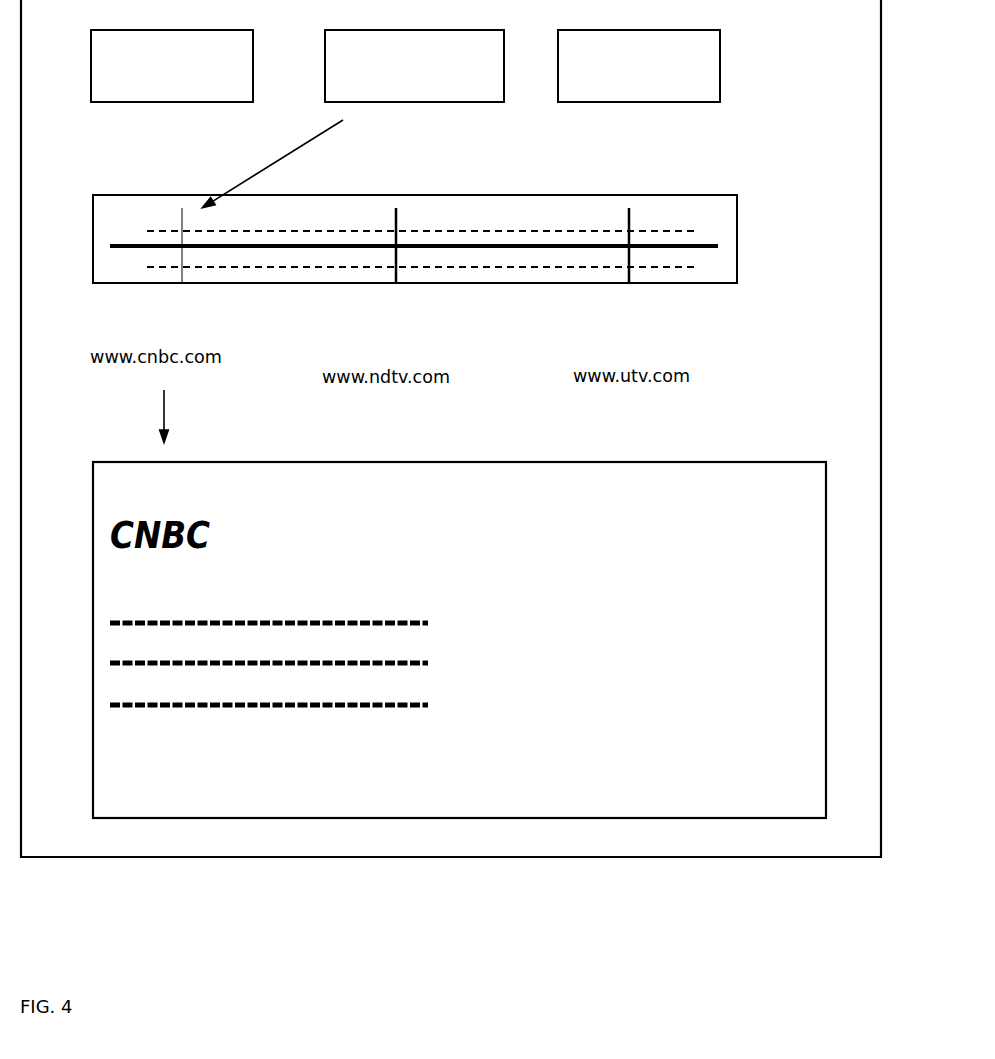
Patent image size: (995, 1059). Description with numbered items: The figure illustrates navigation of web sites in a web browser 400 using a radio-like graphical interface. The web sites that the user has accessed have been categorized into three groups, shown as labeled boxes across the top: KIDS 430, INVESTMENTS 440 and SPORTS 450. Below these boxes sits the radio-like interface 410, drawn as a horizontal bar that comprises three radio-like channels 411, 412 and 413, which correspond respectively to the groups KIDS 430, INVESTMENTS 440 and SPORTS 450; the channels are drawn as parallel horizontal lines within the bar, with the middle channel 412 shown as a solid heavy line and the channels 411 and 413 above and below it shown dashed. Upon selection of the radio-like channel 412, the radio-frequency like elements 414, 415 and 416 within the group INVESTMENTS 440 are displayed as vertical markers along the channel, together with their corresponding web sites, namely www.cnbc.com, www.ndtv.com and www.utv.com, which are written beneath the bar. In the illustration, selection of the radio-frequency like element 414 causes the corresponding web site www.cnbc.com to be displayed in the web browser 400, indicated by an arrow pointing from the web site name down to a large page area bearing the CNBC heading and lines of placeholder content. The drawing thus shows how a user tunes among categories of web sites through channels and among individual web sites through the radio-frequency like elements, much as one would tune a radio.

The web browser 400 is at (451, 463).
The radio-like interface 410 is at (662, 185).
The radio-like channel 411 is at (695, 225).
The radio-like channel 412 is at (733, 248).
The radio-like channel 413 is at (695, 272).
The radio-frequency like element 414 is at (168, 273).
The radio-frequency like element 415 is at (382, 273).
The radio-frequency like element 416 is at (616, 276).
The KIDS group 430 is at (217, 119).
The INVESTMENTS group 440 is at (414, 66).
The SPORTS group 450 is at (639, 66).